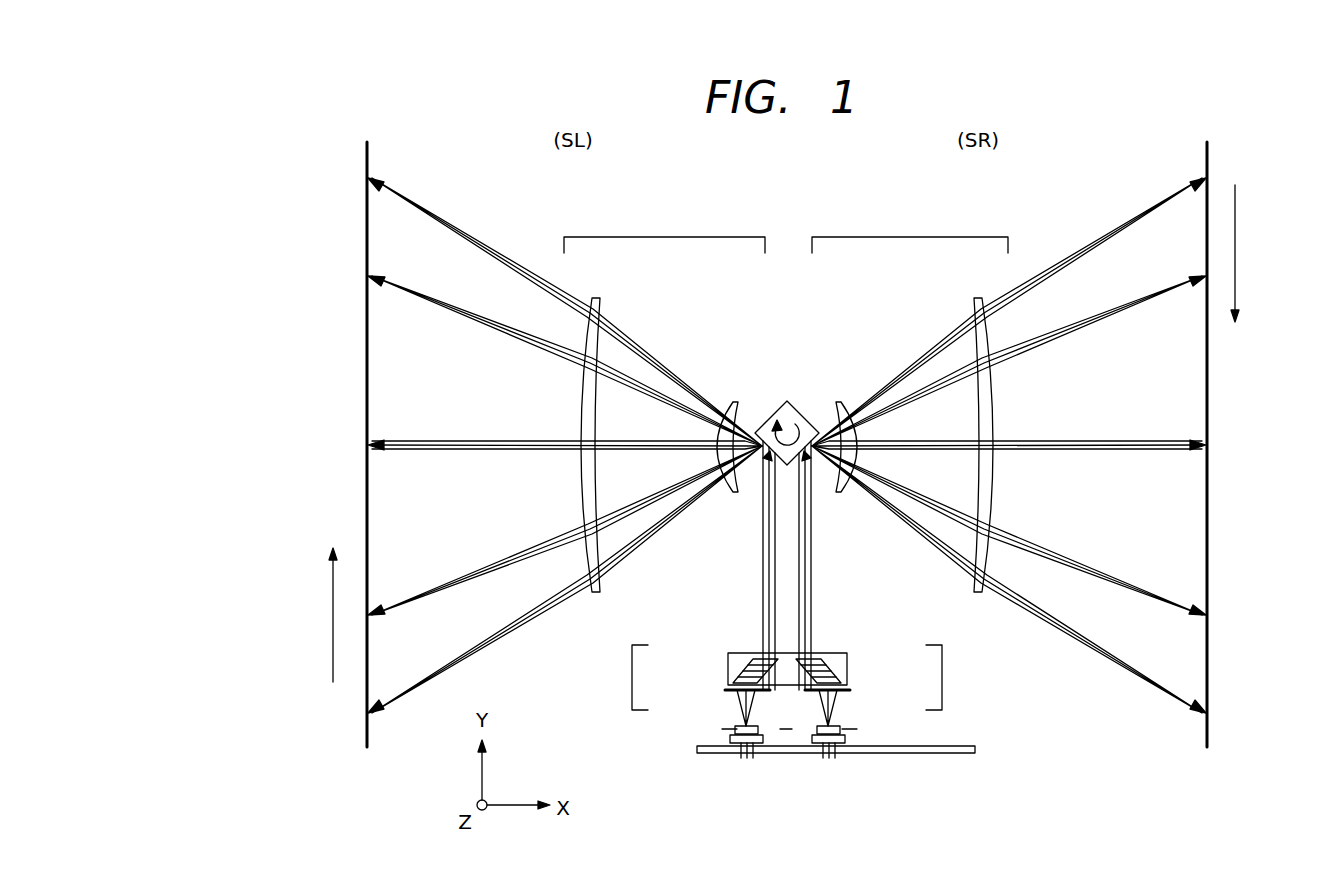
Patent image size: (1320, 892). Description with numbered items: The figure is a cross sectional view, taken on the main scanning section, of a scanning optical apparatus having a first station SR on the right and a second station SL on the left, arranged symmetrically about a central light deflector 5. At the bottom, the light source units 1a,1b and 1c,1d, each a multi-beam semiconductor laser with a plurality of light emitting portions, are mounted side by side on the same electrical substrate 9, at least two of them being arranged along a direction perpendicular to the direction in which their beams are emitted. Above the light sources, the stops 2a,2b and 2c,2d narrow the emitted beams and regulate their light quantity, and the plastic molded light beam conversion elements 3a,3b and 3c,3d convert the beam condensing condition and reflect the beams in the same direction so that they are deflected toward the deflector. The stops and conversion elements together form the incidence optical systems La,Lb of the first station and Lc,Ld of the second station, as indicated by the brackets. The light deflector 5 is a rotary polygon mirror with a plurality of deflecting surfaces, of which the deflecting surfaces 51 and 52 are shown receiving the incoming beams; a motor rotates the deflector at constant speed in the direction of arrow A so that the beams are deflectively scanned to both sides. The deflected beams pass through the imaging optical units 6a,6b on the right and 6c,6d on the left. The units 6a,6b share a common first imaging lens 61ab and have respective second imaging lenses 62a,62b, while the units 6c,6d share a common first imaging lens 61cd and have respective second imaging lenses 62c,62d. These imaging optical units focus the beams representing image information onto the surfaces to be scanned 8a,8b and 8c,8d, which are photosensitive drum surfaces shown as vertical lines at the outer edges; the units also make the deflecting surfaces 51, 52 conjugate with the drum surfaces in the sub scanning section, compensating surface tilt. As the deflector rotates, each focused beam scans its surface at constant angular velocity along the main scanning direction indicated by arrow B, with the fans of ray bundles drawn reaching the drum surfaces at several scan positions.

The light source units 1a,1b is at (836, 727).
The light source units 1c,1d is at (738, 727).
The stops 2a,2b is at (837, 691).
The stops 2c,2d is at (737, 691).
The light beam conversion elements 3a,3b is at (826, 662).
The light beam conversion elements 3c,3d is at (748, 662).
The light deflector 5 is at (797, 410).
The deflecting surface 51 is at (797, 458).
The deflecting surface 52 is at (765, 458).
The imaging optical units 6a,6b is at (910, 407).
The imaging optical units 6c,6d is at (664, 406).
The first imaging lens 61ab is at (838, 494).
The first imaging lens 61cd is at (736, 494).
The second imaging lenses 62a,62b is at (975, 590).
The second imaging lenses 62c,62d is at (600, 590).
The surfaces to be scanned 8a,8b is at (1211, 700).
The surfaces to be scanned 8c,8d is at (363, 700).
The electrical substrate 9 is at (860, 754).
The rotation direction arrow A is at (786, 415).
The scanning direction arrow B is at (784, 433).
The incidence optical systems La,Lb is at (899, 701).
The incidence optical systems Lc,Ld is at (710, 701).